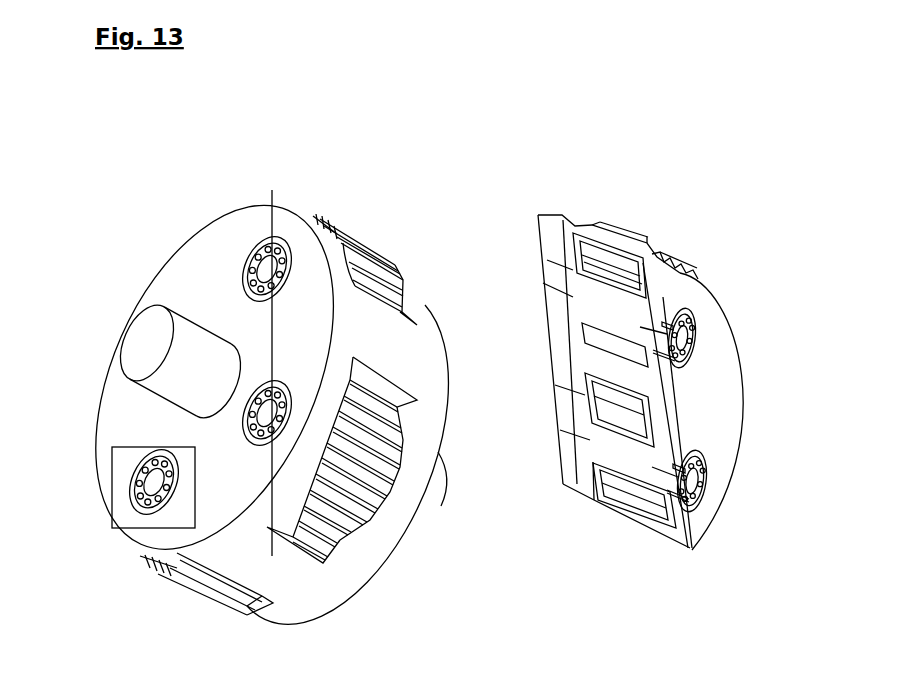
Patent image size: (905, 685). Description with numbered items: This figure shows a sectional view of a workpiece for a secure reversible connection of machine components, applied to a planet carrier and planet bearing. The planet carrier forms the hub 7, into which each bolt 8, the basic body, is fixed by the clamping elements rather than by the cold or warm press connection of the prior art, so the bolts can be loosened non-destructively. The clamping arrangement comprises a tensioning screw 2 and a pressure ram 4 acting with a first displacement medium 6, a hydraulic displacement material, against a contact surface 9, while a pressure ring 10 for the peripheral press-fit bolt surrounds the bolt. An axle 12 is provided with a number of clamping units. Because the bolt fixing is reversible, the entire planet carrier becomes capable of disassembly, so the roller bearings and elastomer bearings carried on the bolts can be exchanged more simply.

The tensioning screw 2 is at (255, 248).
The pressure ram 4 is at (668, 324).
The first displacement medium 6 is at (670, 360).
The hub 7 is at (300, 245).
The bolt 8 is at (658, 480).
The contact surface 9 is at (663, 322).
The pressure ring for peripheral press-fit bolt 10 is at (250, 271).
The axle with a number of clamping units 12 is at (110, 490).